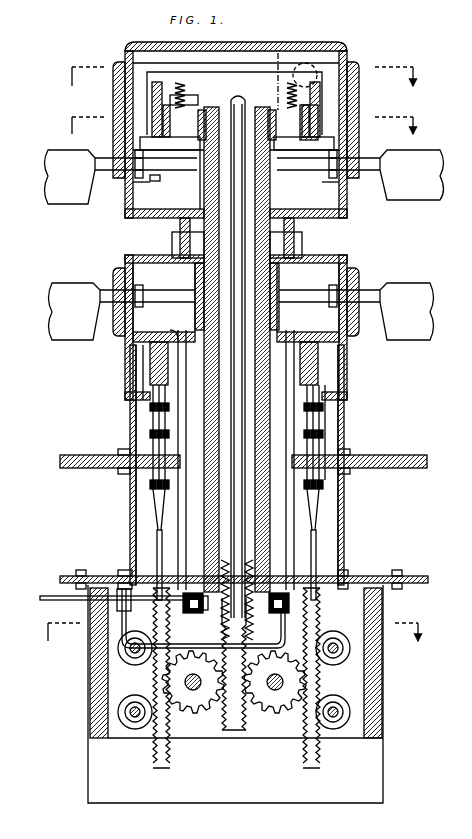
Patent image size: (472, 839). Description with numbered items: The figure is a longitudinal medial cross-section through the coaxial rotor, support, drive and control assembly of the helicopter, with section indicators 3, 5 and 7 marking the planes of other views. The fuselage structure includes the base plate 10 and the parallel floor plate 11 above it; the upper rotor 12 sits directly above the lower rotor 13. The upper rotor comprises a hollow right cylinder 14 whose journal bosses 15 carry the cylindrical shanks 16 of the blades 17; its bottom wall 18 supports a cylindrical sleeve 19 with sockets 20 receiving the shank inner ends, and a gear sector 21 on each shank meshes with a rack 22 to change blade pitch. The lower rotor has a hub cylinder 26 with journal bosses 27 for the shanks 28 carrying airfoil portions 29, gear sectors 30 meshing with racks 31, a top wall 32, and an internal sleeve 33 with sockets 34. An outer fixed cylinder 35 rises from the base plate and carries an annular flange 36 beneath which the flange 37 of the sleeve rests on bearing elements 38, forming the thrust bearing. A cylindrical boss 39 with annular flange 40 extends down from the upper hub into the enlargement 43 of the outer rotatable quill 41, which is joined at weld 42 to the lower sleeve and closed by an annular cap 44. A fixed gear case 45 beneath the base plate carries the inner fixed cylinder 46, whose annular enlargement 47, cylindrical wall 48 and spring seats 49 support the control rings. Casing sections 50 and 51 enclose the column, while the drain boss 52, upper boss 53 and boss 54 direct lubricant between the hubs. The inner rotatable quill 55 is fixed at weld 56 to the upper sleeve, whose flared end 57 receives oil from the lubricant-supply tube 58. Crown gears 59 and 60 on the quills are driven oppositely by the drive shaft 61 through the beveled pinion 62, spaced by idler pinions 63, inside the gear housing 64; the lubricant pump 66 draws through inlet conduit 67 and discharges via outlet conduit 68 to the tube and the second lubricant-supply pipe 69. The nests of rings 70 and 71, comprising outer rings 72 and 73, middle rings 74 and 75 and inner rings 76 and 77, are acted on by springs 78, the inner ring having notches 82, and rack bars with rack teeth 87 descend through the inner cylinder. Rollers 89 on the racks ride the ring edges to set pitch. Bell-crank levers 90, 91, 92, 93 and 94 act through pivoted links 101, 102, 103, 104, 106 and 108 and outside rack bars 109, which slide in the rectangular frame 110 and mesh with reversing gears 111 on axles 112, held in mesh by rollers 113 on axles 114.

The base plate 10 is at (424, 576).
The floor plate 11 is at (396, 455).
The upper rotor 12 is at (128, 45).
The lower rotor 13 is at (124, 262).
The hollow right cylinder 14 is at (127, 97).
The journal bosses 15 is at (118, 178).
The cylindrical shanks 16 is at (112, 158).
The blades 17 is at (60, 152).
The bottom wall 18 is at (165, 209).
The cylindrical sleeve 19 is at (274, 176).
The sockets 20 is at (200, 180).
The gear sector 21 is at (157, 181).
The rack 22 is at (133, 335).
The hub cylinder 26 is at (126, 362).
The journal bosses 27 is at (90, 284).
The shanks 28 is at (170, 290).
The airfoil portions 29 is at (420, 284).
The gear sectors 30 is at (140, 262).
The racks 31 is at (356, 278).
The top wall 32 is at (336, 256).
The internal sleeve 33 is at (279, 274).
The sockets 34 is at (194, 278).
The outer fixed cylinder 35 is at (150, 434).
The annular flange 36 is at (286, 352).
The flange 37 is at (181, 346).
The anti-friction bearing elements 38 is at (184, 372).
The cylindrical boss 39 is at (298, 209).
The annular flange 40 is at (300, 232).
The rotatable quill 41 is at (187, 396).
The weld 42 is at (286, 380).
The enlargement 43 is at (300, 246).
The annular cap 44 is at (325, 209).
The gear case 45 is at (255, 622).
The inner fixed cylinder 46 is at (214, 108).
The annular enlargement 47 is at (262, 108).
The cylindrical wall 48 is at (320, 126).
The spring seats 49 is at (300, 152).
The cylindrical casing section 50 is at (130, 522).
The second cylindrical casing section 51 is at (130, 392).
The cylindrical boss 52 is at (141, 360).
The cylindrical boss 53 is at (172, 240).
The cylindrical boss 54 is at (180, 224).
The inner rotatable quill 55 is at (203, 193).
The weld 56 is at (198, 138).
The flared upper end 57 is at (188, 106).
The lubricant-supply tube 58 is at (237, 93).
The crown gear 59 is at (219, 566).
The crown gear 60 is at (205, 615).
The drive shaft 61 is at (48, 596).
The beveled pinion 62 is at (190, 615).
The idler pinions 63 is at (291, 604).
The gear housing 64 is at (90, 700).
The lubricant pump 66 is at (117, 605).
The inlet conduit 67 is at (122, 646).
The outlet conduit 68 is at (120, 583).
The second lubricant-supply pipe 69 is at (157, 540).
The nest of rings 70 is at (144, 106).
The nest of rings 71 is at (150, 372).
The outer ring 72 is at (156, 82).
The outer ring 73 is at (150, 400).
The middle ring 74 is at (166, 105).
The middle ring 75 is at (157, 407).
The inner ring 76 is at (174, 96).
The inner ring 77 is at (163, 410).
The springs 78 is at (300, 90).
The notches 82 is at (316, 70).
The rack teeth 87 is at (247, 718).
The roller 89 is at (138, 150).
The bell-crank lever 90 is at (322, 400).
The bell-crank lever 91 is at (322, 408).
The bell-crank lever 92 is at (322, 434).
The bell-crank lever 93 is at (322, 444).
The bell-crank lever 94 is at (322, 450).
The pivoted links 101 is at (322, 390).
The pivoted links 102 is at (322, 394).
The pivoted links 103 is at (322, 398).
The pivoted links 104 is at (323, 484).
The pivoted links 106 is at (320, 490).
The pivoted links 108 is at (326, 460).
The outside rack bars 109 is at (302, 745).
The rectangular frame 110 is at (366, 740).
The reversing gear 111 is at (185, 706).
The axle 112 is at (200, 690).
The rollers 113 is at (335, 695).
The axles 114 is at (351, 648).
The section line 7 is at (241, 78).
The section line 3 is at (241, 127).
The section line 5 is at (239, 635).